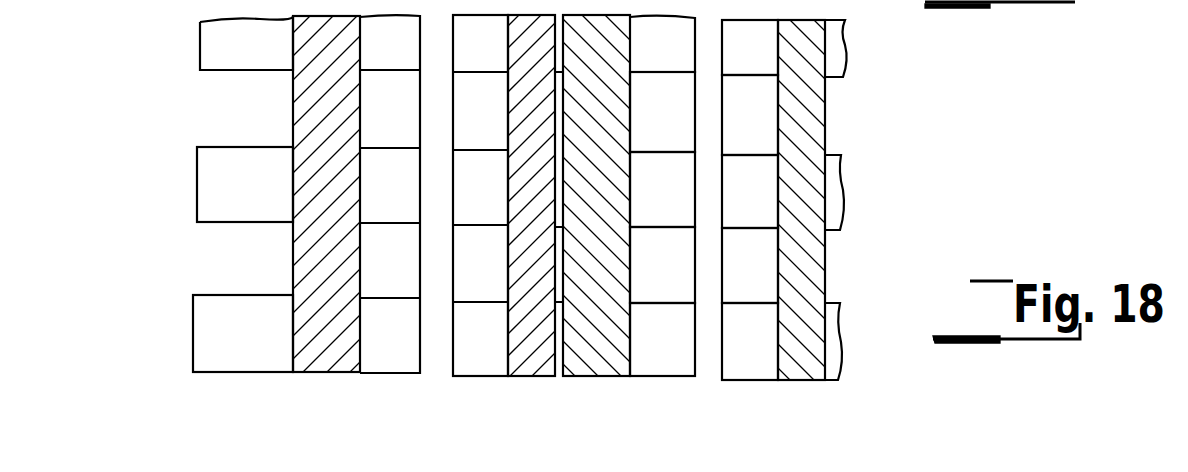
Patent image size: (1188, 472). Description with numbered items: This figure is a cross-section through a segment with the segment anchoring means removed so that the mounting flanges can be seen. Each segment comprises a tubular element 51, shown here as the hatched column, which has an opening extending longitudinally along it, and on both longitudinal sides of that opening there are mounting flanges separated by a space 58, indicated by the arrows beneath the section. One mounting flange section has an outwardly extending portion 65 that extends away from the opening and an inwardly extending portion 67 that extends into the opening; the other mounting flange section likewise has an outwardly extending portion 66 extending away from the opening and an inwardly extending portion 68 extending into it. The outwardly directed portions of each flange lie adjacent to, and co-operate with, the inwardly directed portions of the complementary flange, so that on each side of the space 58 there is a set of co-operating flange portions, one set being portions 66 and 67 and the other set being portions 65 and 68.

The tubular element 51 is at (318, 362).
The space 58 is at (427, 388).
The outwardly extending portion 65 is at (215, 333).
The outwardly extending portion 66 is at (676, 131).
The inwardly extending portion 67 is at (401, 351).
The inwardly extending portion 68 is at (765, 137).